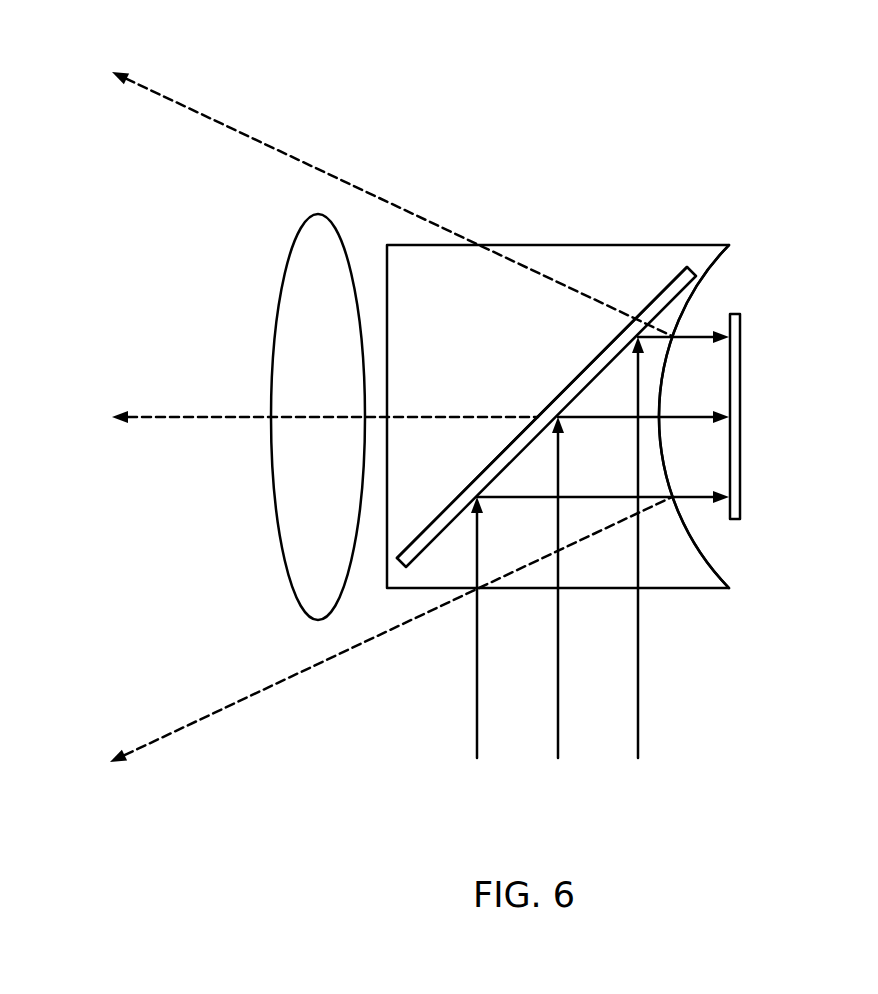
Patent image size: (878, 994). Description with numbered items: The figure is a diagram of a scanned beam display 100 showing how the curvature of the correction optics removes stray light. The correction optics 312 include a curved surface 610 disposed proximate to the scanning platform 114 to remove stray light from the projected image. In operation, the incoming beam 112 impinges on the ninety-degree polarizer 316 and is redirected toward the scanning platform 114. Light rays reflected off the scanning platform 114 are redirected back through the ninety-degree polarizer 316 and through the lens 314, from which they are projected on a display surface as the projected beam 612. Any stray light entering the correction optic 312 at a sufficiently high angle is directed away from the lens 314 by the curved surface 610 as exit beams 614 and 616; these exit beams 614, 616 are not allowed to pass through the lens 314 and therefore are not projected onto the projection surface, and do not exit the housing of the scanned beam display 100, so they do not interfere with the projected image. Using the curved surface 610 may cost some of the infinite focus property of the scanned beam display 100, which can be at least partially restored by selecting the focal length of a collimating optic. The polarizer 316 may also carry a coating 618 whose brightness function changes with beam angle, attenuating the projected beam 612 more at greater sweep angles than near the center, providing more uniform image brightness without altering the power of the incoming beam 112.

The scanned beam display 100 is at (793, 167).
The incoming beam 112 is at (638, 680).
The scanning platform 114 is at (742, 350).
The correction optics 312 is at (711, 565).
The lens 314 is at (295, 602).
The 90-degree polarizer 316 is at (673, 281).
The curved surface 610 is at (710, 268).
The projected beam 612 is at (157, 415).
The exit beam 614 is at (157, 93).
The exit beam 616 is at (193, 722).
The coating 618 is at (445, 510).